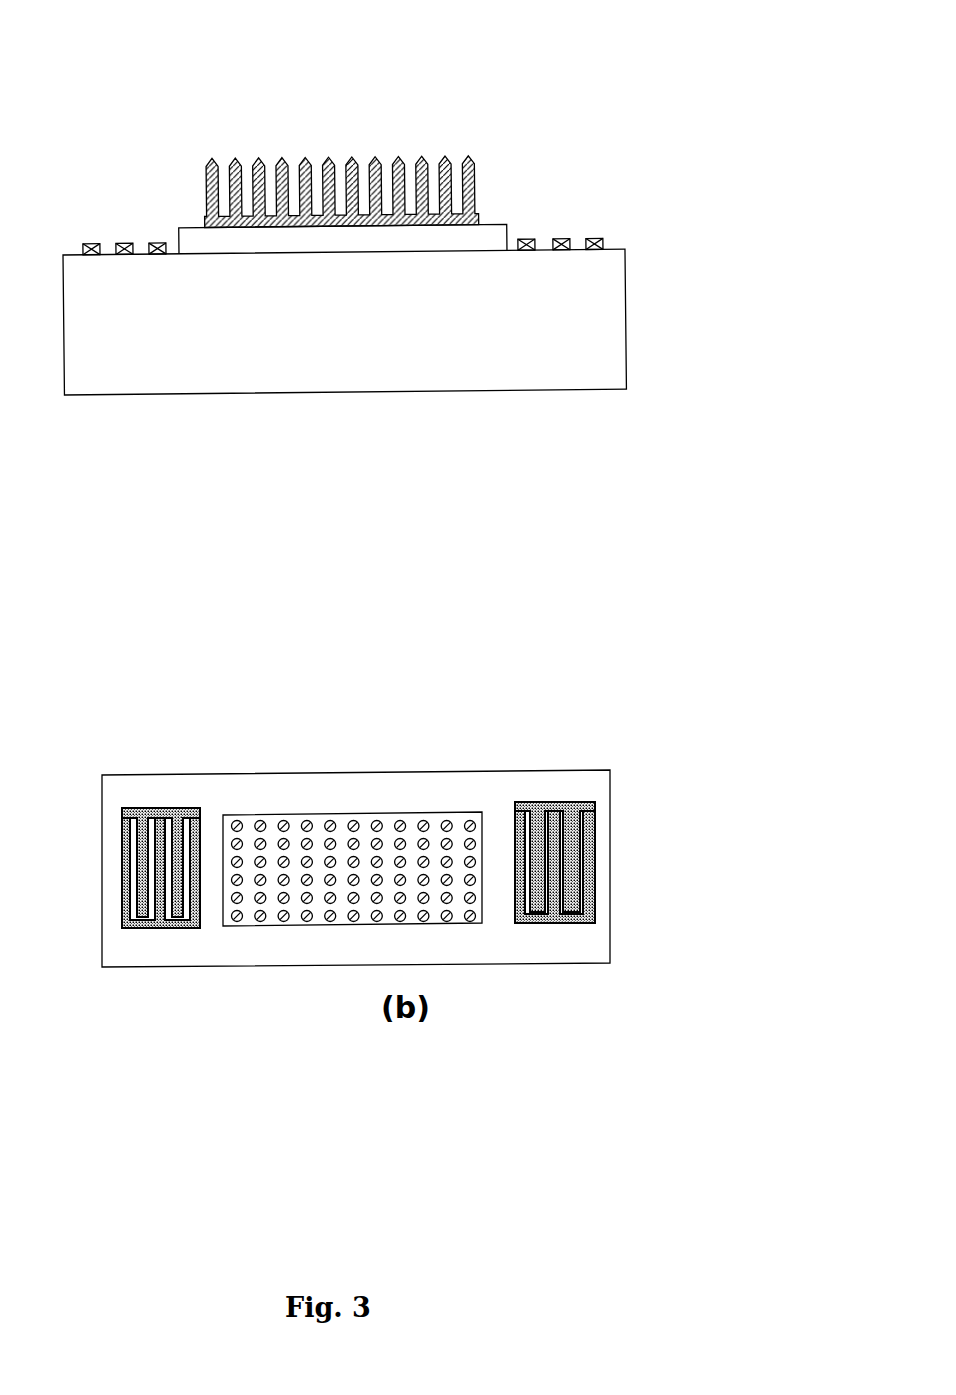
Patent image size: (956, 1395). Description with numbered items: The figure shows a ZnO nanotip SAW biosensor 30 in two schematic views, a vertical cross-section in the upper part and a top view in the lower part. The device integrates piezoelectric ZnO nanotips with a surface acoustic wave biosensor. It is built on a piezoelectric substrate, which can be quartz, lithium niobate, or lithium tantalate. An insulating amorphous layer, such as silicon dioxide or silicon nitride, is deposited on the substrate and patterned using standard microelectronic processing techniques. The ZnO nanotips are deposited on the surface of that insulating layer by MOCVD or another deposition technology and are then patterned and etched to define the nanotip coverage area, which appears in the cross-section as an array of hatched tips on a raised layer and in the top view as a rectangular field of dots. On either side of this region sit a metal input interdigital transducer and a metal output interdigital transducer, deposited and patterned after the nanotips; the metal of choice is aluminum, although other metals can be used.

The ZnO nanotip SAW biosensor 30 is at (257, 70).